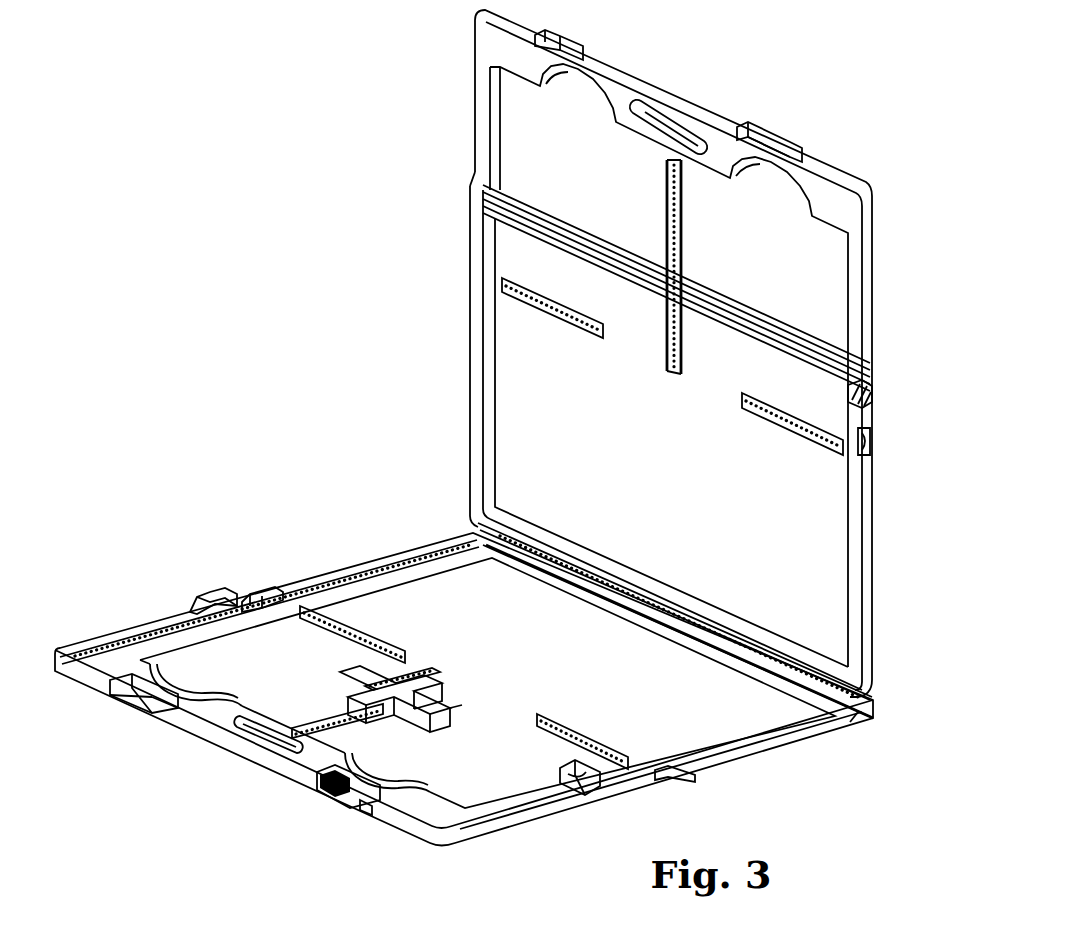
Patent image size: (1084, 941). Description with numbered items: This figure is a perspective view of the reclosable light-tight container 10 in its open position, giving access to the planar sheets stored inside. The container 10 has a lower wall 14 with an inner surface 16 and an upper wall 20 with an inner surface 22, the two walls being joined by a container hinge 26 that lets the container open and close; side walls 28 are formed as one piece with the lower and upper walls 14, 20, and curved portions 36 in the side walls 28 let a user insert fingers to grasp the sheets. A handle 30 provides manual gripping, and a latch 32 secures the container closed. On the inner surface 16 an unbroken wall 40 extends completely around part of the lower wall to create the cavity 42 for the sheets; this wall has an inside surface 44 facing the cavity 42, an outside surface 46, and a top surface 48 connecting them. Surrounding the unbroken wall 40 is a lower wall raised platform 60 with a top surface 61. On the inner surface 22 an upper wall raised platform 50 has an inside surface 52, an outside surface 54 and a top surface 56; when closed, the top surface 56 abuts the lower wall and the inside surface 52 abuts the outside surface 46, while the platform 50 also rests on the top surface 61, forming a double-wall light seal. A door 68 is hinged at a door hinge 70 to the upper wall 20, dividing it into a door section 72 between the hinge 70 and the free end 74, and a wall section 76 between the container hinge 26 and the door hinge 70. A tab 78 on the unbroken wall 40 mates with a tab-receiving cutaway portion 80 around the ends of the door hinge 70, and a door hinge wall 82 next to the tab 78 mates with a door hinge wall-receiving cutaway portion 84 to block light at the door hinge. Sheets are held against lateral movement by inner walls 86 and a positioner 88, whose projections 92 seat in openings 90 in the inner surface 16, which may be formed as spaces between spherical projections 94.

The reclosable light-tight container 10 is at (726, 62).
The lower wall 14 is at (353, 558).
The inner surface of lower wall 16 is at (232, 705).
The upper wall 20 is at (480, 297).
The inner surface of upper wall 22 is at (523, 452).
The container hinge 26 is at (680, 625).
The side walls 28 is at (870, 718).
The handle 30 is at (650, 128).
The latch 32 is at (352, 800).
The curved portions 36 is at (180, 678).
The unbroken wall 40 is at (548, 790).
The cavity 42 is at (487, 683).
The inside surface of unbroken wall 44 is at (237, 617).
The outside surface of unbroken wall 46 is at (508, 802).
The top surface of unbroken wall 48 is at (283, 713).
The upper wall raised platform 50 is at (482, 130).
The inside surface of upper wall raised platform 52 is at (481, 416).
The outside surface of upper wall raised platform 54 is at (868, 530).
The top surface of upper wall raised platform 56 is at (492, 38).
The lower wall raised platform 60 is at (93, 651).
The top surface of lower wall raised platform 61 is at (100, 653).
The door 68 is at (482, 81).
The door hinge 70 is at (728, 318).
The door section 72 is at (669, 365).
The free end of upper wall 74 is at (733, 120).
The wall section 76 is at (522, 362).
The tab 78 is at (570, 778).
The tab-receiving cutaway portion 80 is at (872, 400).
The door hinge wall 82 is at (580, 793).
The door hinge wall-receiving cutaway portion 84 is at (866, 417).
The inner walls 86 is at (487, 550).
The positioner 88 is at (464, 703).
The openings 90 is at (432, 664).
The projections 92 is at (392, 672).
The spherical projections 94 is at (405, 642).